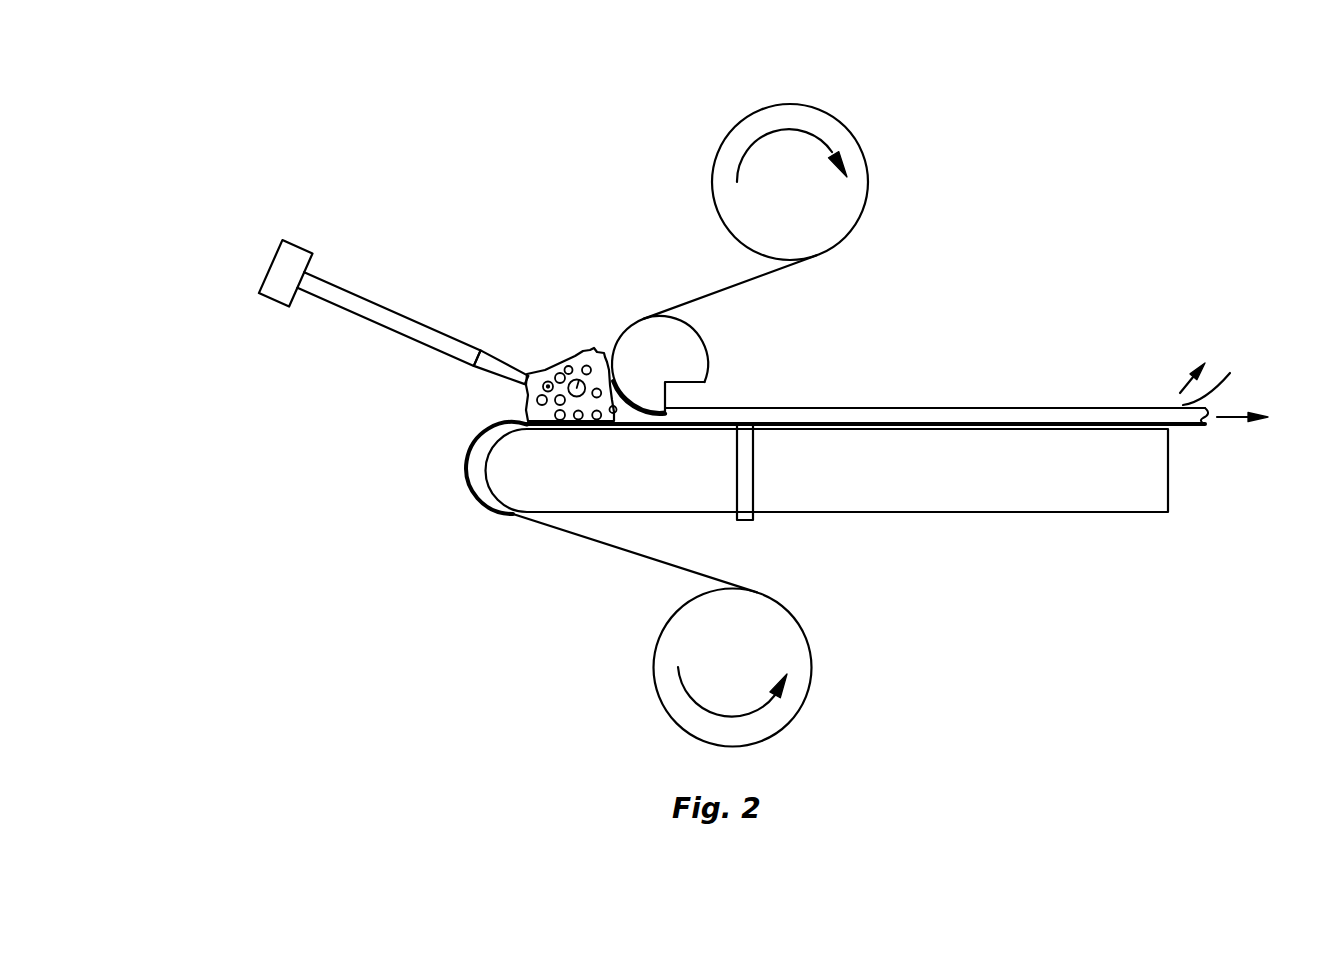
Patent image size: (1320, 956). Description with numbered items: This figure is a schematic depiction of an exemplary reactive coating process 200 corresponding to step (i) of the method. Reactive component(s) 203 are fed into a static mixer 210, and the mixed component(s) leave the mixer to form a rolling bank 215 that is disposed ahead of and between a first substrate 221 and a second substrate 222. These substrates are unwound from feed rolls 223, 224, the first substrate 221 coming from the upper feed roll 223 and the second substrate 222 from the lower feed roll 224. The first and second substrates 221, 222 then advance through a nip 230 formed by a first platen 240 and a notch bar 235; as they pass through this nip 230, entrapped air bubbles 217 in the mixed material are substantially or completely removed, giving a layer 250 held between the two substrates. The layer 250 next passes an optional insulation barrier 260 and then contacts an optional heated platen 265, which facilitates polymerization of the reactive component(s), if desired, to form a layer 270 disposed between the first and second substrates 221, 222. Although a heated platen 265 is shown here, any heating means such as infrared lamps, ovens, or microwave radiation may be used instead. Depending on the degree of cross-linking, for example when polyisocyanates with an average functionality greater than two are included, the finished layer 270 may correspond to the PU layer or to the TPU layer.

The process 200 is at (466, 122).
The reactive component 203 is at (257, 260).
The static mixer 210 is at (372, 308).
The rolling bank 215 is at (583, 350).
The entrapped air bubbles 217 is at (580, 357).
The first substrate 221 is at (717, 288).
The second substrate 222 is at (630, 552).
The feed roll 223 is at (847, 210).
The feed roll 224 is at (793, 635).
The nip 230 is at (688, 413).
The notch bar 235 is at (708, 390).
The first platen 240 is at (513, 473).
The layer 250 is at (675, 418).
The insulation barrier 260 is at (746, 512).
The heated platen 265 is at (982, 497).
The layer 270 is at (1007, 413).